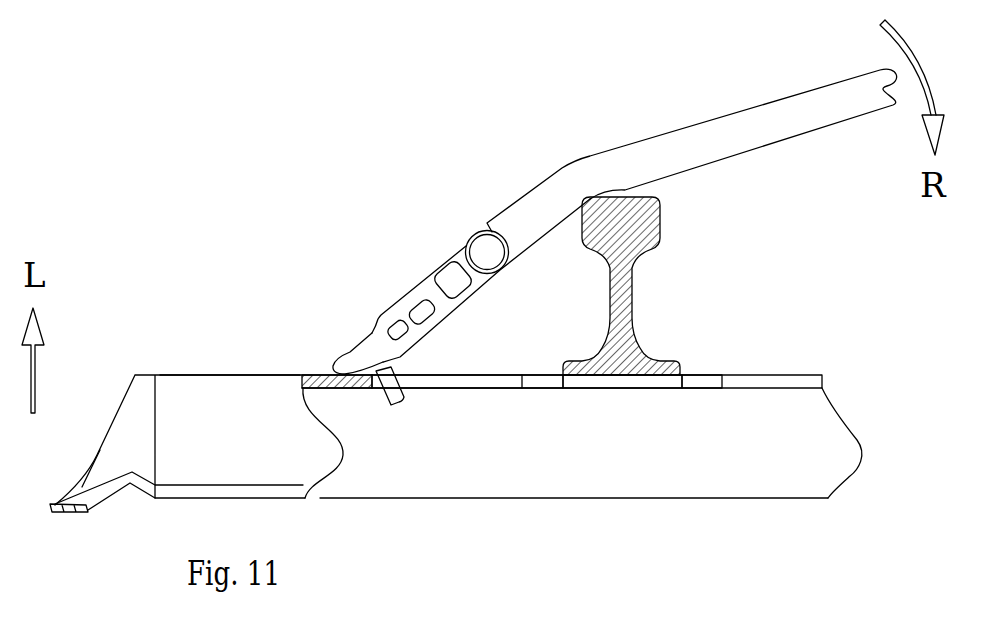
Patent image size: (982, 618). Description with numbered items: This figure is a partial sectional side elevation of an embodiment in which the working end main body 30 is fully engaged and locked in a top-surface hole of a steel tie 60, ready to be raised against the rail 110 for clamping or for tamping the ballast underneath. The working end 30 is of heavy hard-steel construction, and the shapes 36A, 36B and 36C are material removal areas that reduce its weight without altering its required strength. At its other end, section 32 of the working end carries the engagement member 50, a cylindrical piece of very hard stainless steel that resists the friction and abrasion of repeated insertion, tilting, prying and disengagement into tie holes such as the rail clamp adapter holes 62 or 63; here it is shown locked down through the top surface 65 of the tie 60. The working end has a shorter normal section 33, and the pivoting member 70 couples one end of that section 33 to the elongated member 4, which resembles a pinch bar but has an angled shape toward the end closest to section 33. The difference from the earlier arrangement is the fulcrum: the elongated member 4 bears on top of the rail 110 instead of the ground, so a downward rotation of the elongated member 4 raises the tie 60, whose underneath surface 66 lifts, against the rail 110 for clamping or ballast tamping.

The elongated member 4 is at (640, 162).
The working end main body 30 is at (430, 262).
The other end (section) of member 30 32 is at (347, 360).
The normal section 33 is at (482, 274).
The material removal area 36A is at (453, 283).
The material removal area 36B is at (421, 311).
The material removal area 36C is at (398, 330).
The engagement member 50 is at (396, 396).
The tie 60 is at (140, 385).
The rail clamp adapter hole 62 is at (541, 390).
The rail clamp adapter hole 63 is at (702, 390).
The top surface 65 is at (203, 372).
The underneath surface 66 is at (472, 390).
The pivoting member 70 is at (488, 250).
The rail 110 is at (650, 236).